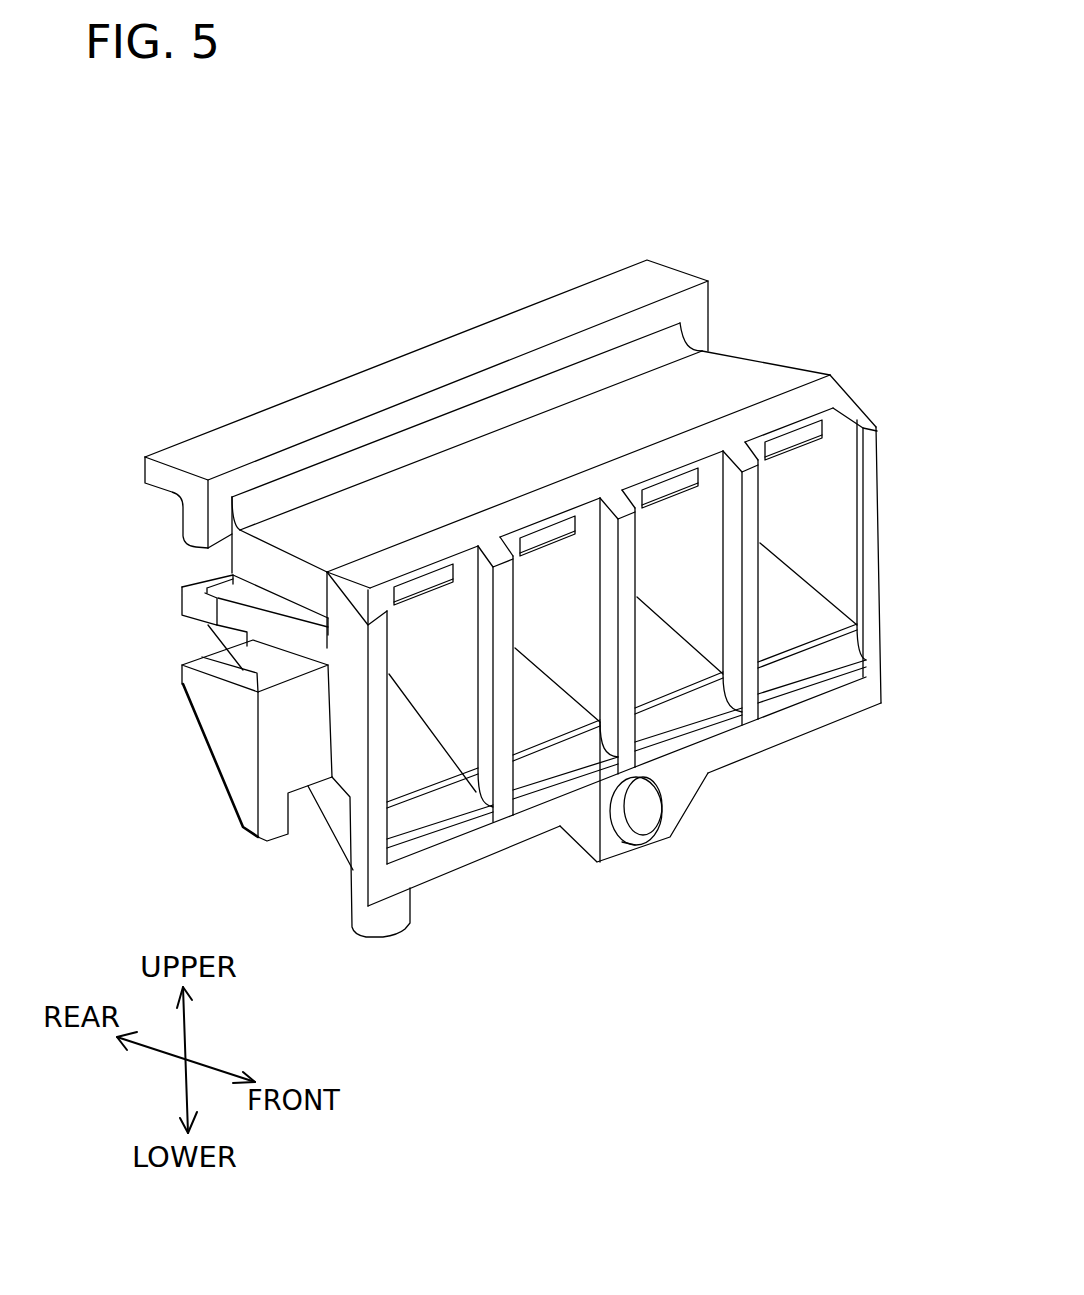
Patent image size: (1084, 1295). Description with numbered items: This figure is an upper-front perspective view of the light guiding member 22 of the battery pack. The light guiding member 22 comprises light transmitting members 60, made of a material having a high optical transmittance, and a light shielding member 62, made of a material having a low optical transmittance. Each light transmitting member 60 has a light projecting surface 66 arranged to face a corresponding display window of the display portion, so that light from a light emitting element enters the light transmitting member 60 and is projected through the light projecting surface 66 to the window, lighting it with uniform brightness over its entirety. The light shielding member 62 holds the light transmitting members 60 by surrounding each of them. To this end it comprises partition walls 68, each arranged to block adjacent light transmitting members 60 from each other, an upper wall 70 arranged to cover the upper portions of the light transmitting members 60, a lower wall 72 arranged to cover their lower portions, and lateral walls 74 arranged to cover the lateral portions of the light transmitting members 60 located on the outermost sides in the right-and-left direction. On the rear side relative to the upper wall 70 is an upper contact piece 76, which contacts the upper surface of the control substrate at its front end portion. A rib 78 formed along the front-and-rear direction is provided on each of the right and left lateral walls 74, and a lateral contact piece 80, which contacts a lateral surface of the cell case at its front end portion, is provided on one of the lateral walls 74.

The light guiding member 22 is at (839, 300).
The light transmitting members 60 is at (647, 707).
The light shielding member 62 is at (753, 373).
The light projecting surface 66 is at (410, 770).
The partition walls 68 is at (503, 743).
The upper wall 70 is at (490, 458).
The lower wall 72 is at (333, 847).
The lateral walls 74 is at (878, 450).
The upper contact piece 76 is at (367, 385).
The rib 78 is at (228, 582).
The lateral contact piece 80 is at (237, 772).